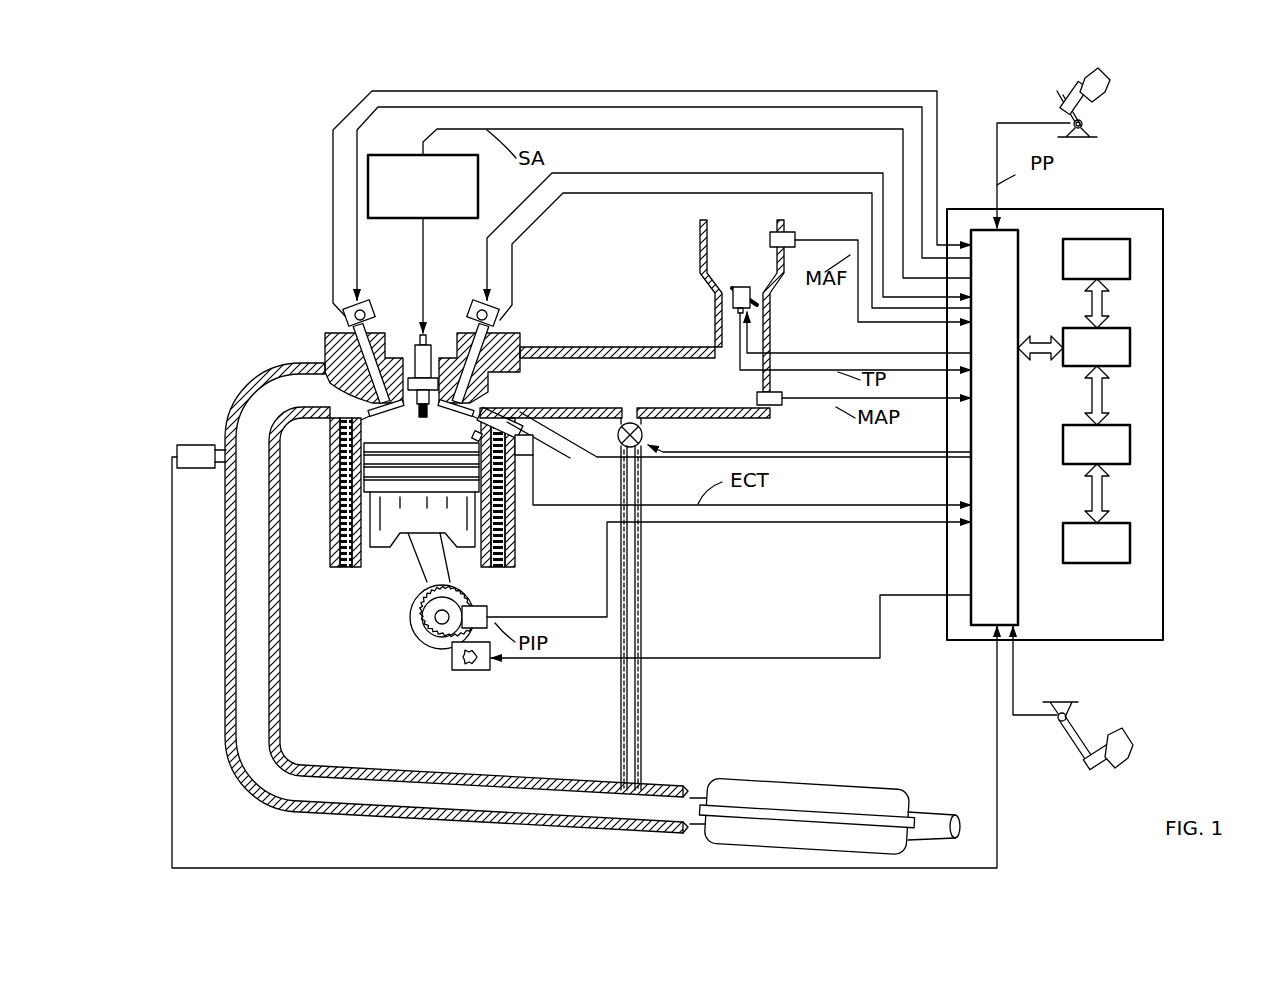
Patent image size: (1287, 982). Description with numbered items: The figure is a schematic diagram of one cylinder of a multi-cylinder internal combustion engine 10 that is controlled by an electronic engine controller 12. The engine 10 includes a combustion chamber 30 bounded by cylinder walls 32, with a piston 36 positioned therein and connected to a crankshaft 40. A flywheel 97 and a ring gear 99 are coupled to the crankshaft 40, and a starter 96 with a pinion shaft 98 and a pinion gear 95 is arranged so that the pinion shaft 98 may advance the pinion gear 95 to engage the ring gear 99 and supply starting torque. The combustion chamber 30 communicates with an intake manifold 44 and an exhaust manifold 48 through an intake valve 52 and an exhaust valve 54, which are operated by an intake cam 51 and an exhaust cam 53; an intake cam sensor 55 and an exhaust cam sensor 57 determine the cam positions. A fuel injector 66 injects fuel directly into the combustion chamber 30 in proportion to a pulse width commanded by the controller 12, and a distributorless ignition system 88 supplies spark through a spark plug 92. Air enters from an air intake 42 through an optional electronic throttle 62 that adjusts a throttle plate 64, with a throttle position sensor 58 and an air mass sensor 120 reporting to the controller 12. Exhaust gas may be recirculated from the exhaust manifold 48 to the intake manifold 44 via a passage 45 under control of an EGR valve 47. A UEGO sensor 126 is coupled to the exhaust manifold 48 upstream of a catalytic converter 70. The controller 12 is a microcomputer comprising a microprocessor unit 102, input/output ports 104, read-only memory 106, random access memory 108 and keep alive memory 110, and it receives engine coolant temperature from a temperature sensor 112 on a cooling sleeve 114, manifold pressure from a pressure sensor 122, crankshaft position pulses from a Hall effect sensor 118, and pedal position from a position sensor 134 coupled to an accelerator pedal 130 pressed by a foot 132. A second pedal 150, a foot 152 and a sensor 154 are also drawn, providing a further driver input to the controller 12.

The internal combustion engine 10 is at (262, 290).
The electronic engine controller 12 is at (1100, 408).
The combustion chamber 30 is at (420, 427).
The cylinder walls 32 is at (367, 563).
The piston 36 is at (407, 518).
The crankshaft 40 is at (425, 650).
The air intake 42 is at (757, 262).
The intake manifold 44 is at (692, 393).
The passage 45 is at (645, 583).
The EGR valve 47 is at (645, 432).
The exhaust manifold 48 is at (311, 400).
The intake cam 51 is at (472, 298).
The intake valve 52 is at (462, 394).
The exhaust cam 53 is at (370, 300).
The exhaust valve 54 is at (375, 400).
The intake cam sensor 55 is at (497, 322).
The exhaust cam sensor 57 is at (347, 320).
The throttle position sensor 58 is at (718, 318).
The electronic throttle 62 is at (757, 292).
The throttle plate 64 is at (730, 292).
The fuel injector 66 is at (721, 442).
The catalytic converter 70 is at (723, 778).
The distributorless ignition system 88 is at (383, 156).
The spark plug 92 is at (427, 335).
The pinion gear 95 is at (477, 670).
The starter 96 is at (482, 672).
The flywheel 97 is at (413, 630).
The pinion shaft 98 is at (468, 667).
The ring gear 99 is at (438, 657).
The microprocessor unit 102 is at (1132, 348).
The input/output ports 104 is at (1020, 235).
The read-only memory 106 is at (1132, 258).
The random access memory 108 is at (1132, 442).
The keep alive memory 110 is at (1132, 540).
The temperature sensor 112 is at (537, 455).
The cooling sleeve 114 is at (500, 520).
The Hall effect sensor 118 is at (487, 608).
The air mass sensor 120 is at (790, 232).
The pressure sensor 122 is at (785, 405).
The Universal Exhaust Gas Oxygen sensor 126 is at (176, 447).
The accelerator pedal 130 is at (1060, 100).
The foot 132 is at (1110, 88).
The position sensor 134 is at (1098, 126).
The brake pedal 150 is at (1085, 760).
The foot 152 is at (1122, 728).
The brake pedal sensor 154 is at (1053, 713).